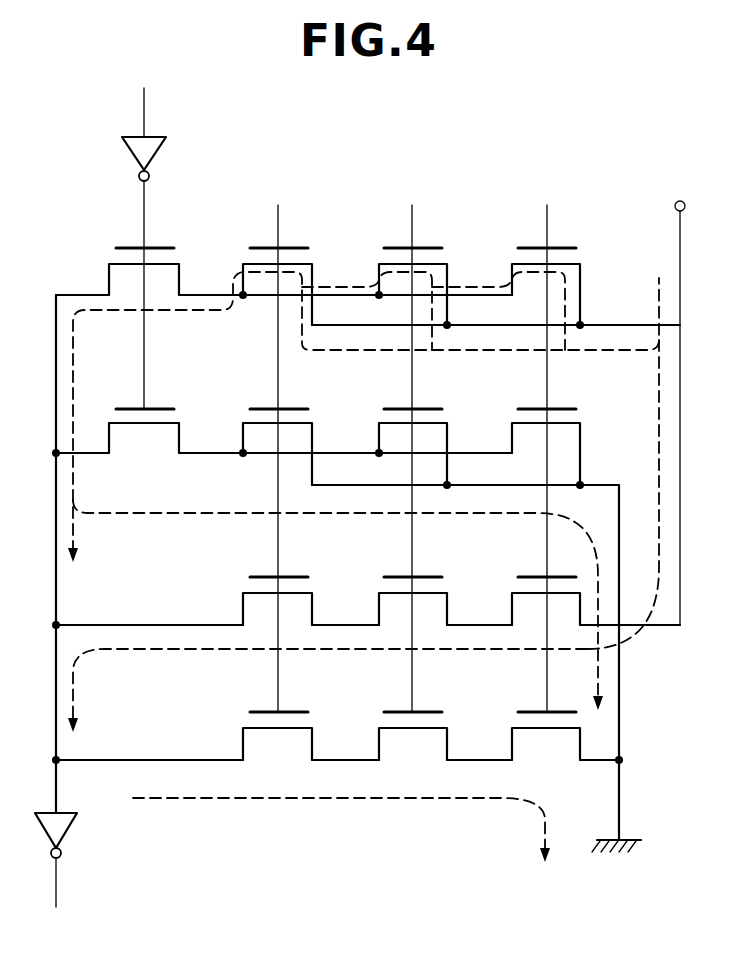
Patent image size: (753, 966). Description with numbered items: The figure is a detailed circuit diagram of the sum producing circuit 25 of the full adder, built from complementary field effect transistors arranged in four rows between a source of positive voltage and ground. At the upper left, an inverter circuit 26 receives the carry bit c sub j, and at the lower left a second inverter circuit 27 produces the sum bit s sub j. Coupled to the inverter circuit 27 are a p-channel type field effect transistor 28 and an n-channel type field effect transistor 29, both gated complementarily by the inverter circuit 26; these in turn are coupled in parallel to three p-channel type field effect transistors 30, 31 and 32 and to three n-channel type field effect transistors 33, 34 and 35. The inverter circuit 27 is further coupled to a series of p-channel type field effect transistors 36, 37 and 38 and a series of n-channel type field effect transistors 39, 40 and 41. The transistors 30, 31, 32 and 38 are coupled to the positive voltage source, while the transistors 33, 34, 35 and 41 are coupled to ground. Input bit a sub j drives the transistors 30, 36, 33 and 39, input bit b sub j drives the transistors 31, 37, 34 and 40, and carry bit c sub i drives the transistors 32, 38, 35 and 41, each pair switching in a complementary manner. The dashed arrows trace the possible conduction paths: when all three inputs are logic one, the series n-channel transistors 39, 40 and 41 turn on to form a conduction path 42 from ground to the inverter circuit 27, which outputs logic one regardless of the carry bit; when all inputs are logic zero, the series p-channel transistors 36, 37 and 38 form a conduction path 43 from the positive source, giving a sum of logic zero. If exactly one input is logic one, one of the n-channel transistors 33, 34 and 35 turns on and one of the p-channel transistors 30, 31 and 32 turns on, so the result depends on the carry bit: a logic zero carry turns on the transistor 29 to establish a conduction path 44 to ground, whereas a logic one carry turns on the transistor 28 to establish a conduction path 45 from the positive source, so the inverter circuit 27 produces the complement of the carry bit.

The sum producing circuit 25 is at (484, 163).
The inverter circuit 26 is at (158, 154).
The inverter circuit 27 is at (66, 836).
The p-channel type field effect transistor 28 is at (150, 248).
The n-channel type field effect transistor 29 is at (152, 409).
The p-channel type field effect transistor 30 is at (292, 248).
The p-channel type field effect transistor 31 is at (427, 248).
The p-channel type field effect transistor 32 is at (562, 248).
The n-channel type field effect transistor 33 is at (290, 409).
The n-channel type field effect transistor 34 is at (425, 409).
The n-channel type field effect transistor 35 is at (560, 409).
The p-channel type field effect transistor 36 is at (292, 577).
The p-channel type field effect transistor 37 is at (427, 577).
The p-channel type field effect transistor 38 is at (538, 578).
The n-channel type field effect transistor 39 is at (288, 712).
The n-channel type field effect transistor 40 is at (425, 712).
The n-channel type field effect transistor 41 is at (554, 712).
The conduction path 42 is at (252, 800).
The conduction path 43 is at (166, 651).
The conduction path 44 is at (218, 514).
The conduction path 45 is at (106, 311).